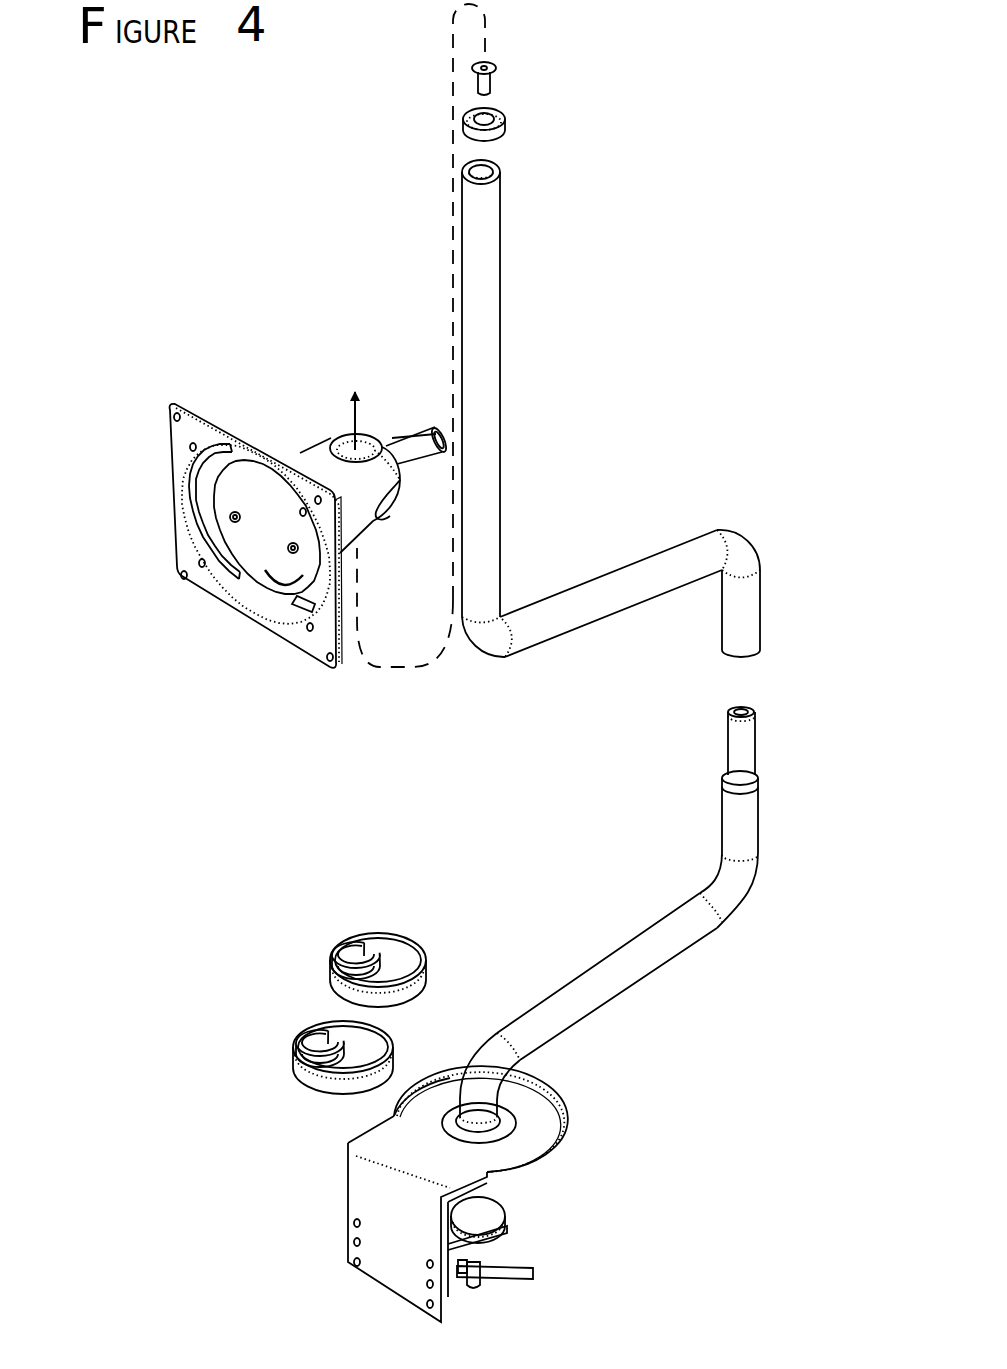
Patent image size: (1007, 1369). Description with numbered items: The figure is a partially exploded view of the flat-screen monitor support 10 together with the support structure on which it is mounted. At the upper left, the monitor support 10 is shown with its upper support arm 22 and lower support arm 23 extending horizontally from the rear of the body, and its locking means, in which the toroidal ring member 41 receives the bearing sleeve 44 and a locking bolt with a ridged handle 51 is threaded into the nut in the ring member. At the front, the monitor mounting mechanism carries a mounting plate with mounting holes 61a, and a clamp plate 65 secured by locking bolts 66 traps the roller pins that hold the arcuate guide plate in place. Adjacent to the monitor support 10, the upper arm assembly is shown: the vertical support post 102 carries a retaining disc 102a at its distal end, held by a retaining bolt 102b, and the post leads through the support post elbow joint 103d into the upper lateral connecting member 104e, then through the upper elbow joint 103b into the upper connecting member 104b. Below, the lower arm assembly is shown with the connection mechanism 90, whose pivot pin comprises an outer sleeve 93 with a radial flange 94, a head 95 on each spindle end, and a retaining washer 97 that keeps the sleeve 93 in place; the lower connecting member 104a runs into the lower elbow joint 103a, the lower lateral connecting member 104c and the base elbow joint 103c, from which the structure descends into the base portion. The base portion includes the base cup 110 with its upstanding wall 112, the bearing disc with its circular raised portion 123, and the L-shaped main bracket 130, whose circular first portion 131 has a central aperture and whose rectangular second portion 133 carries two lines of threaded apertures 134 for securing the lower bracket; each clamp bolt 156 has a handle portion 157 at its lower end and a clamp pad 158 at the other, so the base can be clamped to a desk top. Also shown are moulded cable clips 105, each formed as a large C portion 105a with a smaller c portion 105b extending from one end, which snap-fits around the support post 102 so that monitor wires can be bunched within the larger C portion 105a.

The flat-screen monitor support 10 is at (239, 352).
The mounting holes 61a is at (193, 447).
The clamp plate 65 is at (247, 498).
The locking bolts 66 is at (237, 518).
The bearing sleeve 44 is at (340, 437).
The upper support arm 22 is at (383, 443).
The ridged handle 51 is at (413, 437).
The ring member 41 is at (392, 502).
The lower support arm 23 is at (380, 523).
The retaining bolt 102b is at (495, 67).
The retaining disc 102a is at (504, 124).
The vertical support post 102 is at (490, 227).
The support post elbow joint 103d is at (489, 645).
The upper lateral connecting member 104e is at (620, 585).
The upper elbow joint 103b is at (745, 550).
The upper connecting member 104b is at (752, 598).
The connection mechanism 90 is at (727, 750).
The head 95 is at (738, 708).
The retaining washer 97 is at (756, 713).
The outer sleeve 93 is at (750, 737).
The flange 94 is at (763, 776).
The lower connecting member 104a is at (752, 832).
The lower elbow joint 103a is at (740, 885).
The lower lateral connecting member 104c is at (655, 958).
The base elbow joint 103c is at (493, 1048).
The cable clip 105 is at (407, 928).
The large 'C' portion 105a is at (418, 958).
The small 'c' portion 105b is at (355, 972).
The wall 112 is at (443, 1080).
The first portion 131 is at (528, 1100).
The circular raised portion 123 is at (505, 1127).
The base cup 110 is at (548, 1158).
The main bracket 130 is at (345, 1145).
The second portion 133 is at (365, 1196).
The threaded apertures 134 is at (355, 1223).
The clamp pad 158 is at (485, 1212).
The handle portion 157 is at (535, 1268).
The clamp bolt 156 is at (475, 1290).